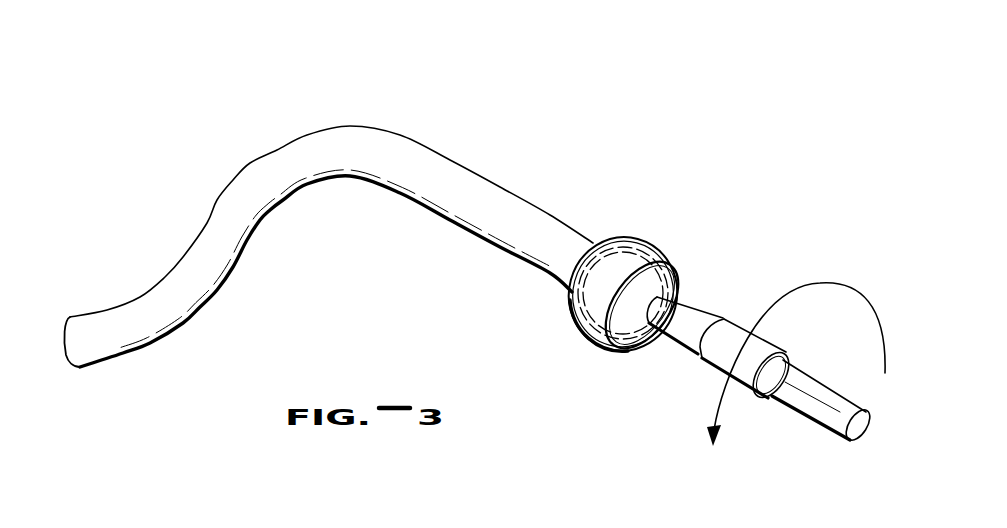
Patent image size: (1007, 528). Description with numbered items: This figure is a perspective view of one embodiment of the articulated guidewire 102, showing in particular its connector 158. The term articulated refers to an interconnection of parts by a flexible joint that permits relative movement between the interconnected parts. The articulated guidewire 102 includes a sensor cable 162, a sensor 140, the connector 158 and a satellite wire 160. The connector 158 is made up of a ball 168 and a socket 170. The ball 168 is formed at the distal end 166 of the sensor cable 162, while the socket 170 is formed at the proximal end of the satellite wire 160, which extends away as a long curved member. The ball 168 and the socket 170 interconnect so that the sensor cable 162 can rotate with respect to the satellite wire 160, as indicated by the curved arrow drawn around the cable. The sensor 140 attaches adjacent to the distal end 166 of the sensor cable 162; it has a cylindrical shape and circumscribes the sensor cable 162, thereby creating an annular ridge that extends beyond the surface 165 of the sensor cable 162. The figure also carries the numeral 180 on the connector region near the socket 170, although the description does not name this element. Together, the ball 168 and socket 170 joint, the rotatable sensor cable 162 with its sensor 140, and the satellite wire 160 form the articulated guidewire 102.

The articulated guidewire 102 is at (374, 133).
The satellite wire 160 is at (490, 185).
The socket 170 is at (632, 237).
The connector 158 is at (671, 256).
The inner groove 180 is at (668, 282).
The ball 168 is at (660, 290).
The distal end 166 is at (680, 306).
The sensor 140 is at (779, 350).
The surface 165 is at (797, 409).
The sensor cable 162 is at (830, 422).